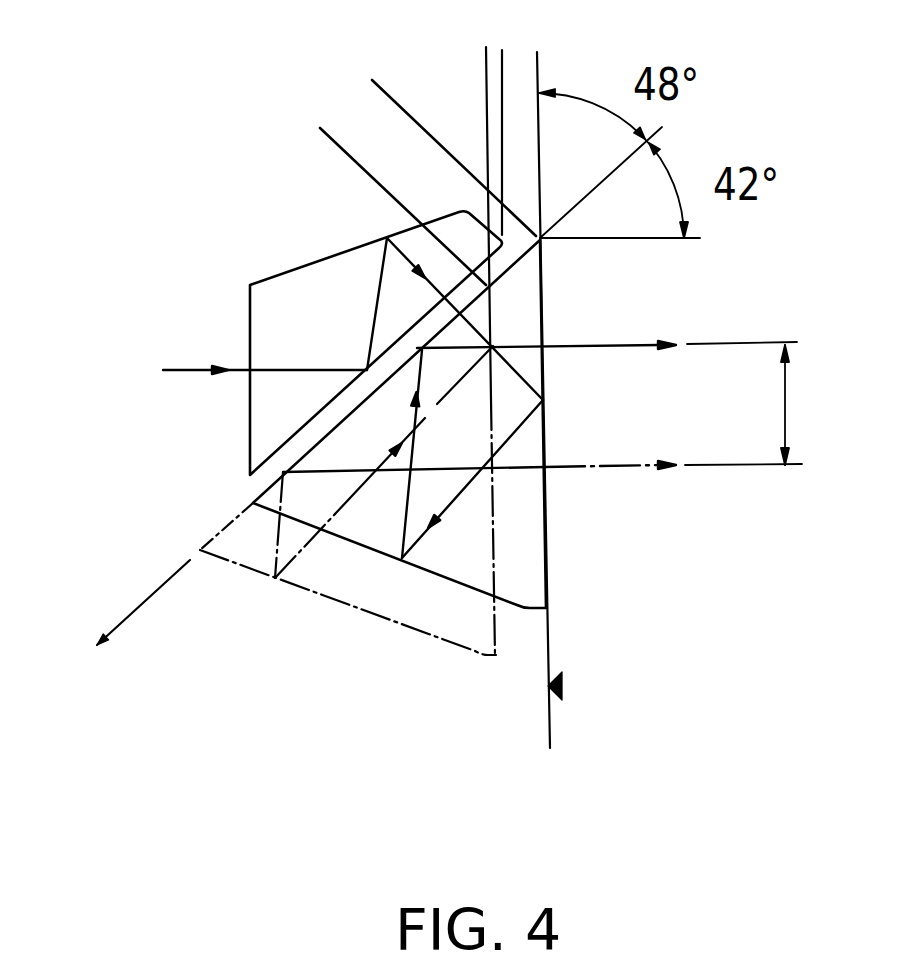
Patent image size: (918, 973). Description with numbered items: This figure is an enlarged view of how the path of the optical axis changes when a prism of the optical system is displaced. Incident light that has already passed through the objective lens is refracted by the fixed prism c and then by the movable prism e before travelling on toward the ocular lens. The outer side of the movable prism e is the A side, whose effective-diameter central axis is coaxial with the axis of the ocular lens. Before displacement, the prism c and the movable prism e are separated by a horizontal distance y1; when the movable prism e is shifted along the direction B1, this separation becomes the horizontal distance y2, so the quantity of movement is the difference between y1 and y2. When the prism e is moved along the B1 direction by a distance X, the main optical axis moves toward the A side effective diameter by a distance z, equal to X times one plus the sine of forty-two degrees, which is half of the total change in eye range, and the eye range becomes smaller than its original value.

The prism c is at (260, 267).
The movable prism e is at (562, 563).
The A side A is at (562, 686).
The B1 direction B1 is at (148, 605).
The distance X is at (378, 88).
The horizontal distance y1 is at (502, 70).
The horizontal distance y2 is at (612, 65).
The distance Z z is at (743, 403).